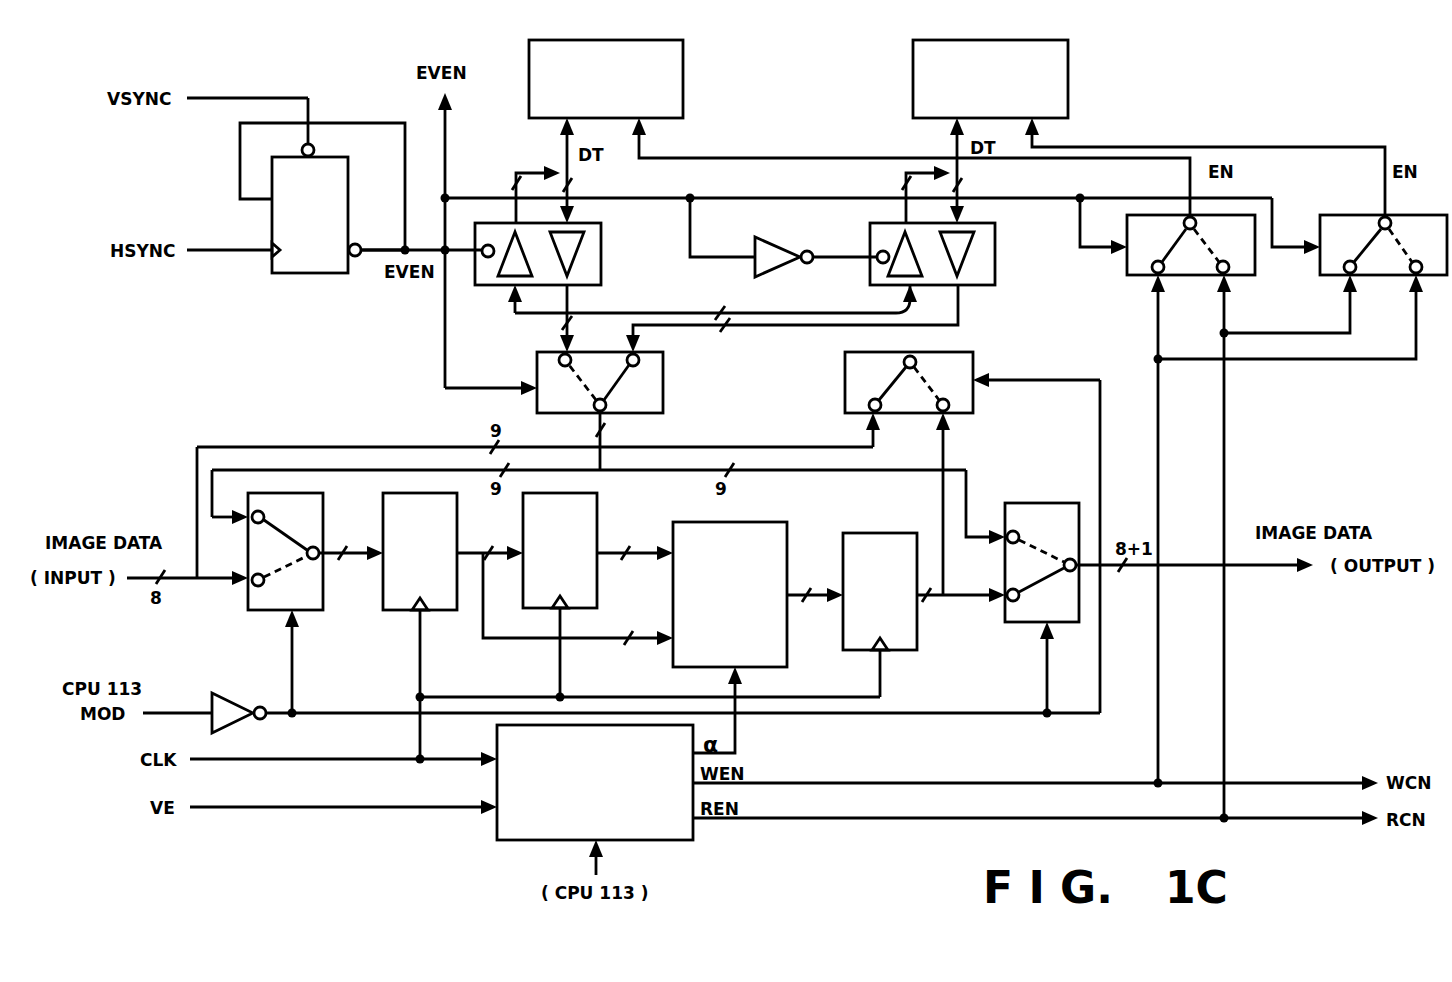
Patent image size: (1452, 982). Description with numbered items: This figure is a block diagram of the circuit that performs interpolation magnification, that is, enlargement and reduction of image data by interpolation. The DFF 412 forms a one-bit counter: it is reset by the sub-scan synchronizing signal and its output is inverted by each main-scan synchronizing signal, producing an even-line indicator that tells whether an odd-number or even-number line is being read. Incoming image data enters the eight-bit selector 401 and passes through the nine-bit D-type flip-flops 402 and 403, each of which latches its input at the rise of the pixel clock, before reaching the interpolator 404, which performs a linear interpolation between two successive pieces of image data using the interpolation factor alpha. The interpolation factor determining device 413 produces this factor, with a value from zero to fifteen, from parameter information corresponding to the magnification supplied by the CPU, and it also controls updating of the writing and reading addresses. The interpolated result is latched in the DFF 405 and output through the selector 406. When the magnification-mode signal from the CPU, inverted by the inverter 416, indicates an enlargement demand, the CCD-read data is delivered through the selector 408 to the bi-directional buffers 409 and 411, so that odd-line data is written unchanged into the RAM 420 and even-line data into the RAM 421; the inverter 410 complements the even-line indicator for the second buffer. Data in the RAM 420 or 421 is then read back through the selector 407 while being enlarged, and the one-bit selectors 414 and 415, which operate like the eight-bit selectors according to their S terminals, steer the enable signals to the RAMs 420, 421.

The 8-bit selector 401 is at (257, 610).
The 9-bit D-type flip-flop 402 is at (397, 610).
The 9-bit D-type flip-flop 403 is at (597, 509).
The interpolator 404 is at (750, 522).
The 9-bit D-type flip-flop 405 is at (876, 533).
The 8-bit selector 406 is at (1052, 503).
The 8-bit selector 407 is at (663, 406).
The 8-bit selector 408 is at (973, 361).
The bi-directional buffer 409 is at (601, 251).
The inverter 410 is at (790, 240).
The bi-directional buffer 411 is at (995, 258).
The D-type flip-flop 412 is at (327, 274).
The interpolation factor determining device 413 is at (497, 829).
The 1-bit selector 414 is at (1130, 275).
The 1-bit selector 415 is at (1325, 275).
The inverter 416 is at (238, 693).
The RAM 420 is at (683, 76).
The RAM 421 is at (1068, 76).